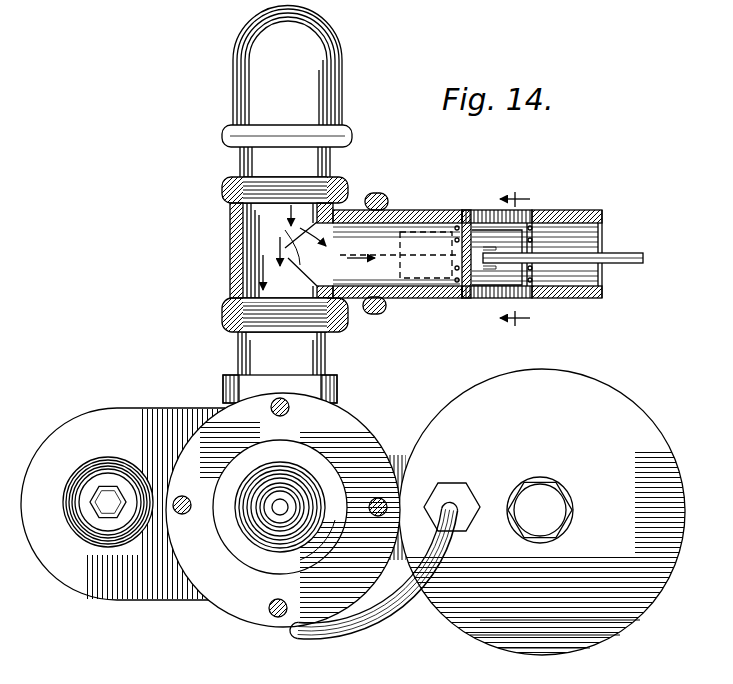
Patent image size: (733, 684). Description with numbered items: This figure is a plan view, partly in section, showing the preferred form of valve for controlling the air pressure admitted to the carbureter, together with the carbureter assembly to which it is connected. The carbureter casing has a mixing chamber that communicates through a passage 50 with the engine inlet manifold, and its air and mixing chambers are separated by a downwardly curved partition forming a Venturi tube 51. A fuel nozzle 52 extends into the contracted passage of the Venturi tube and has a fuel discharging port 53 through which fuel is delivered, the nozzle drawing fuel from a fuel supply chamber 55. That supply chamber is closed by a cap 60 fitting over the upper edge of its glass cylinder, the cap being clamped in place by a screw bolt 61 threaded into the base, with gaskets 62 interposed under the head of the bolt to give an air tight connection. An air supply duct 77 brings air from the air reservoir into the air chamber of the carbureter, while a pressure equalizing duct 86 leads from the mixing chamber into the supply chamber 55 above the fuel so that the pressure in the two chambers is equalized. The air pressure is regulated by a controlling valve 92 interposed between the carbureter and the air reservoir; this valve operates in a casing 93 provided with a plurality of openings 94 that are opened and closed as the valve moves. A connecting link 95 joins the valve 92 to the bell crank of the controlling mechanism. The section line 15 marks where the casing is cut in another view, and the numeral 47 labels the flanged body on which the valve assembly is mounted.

The section line 15- 15 is at (517, 256).
The valve casing flange disc 47 is at (264, 626).
The passage 50 is at (258, 568).
The Venturi tube 51 is at (240, 535).
The fuel nozzle 52 is at (288, 495).
The fuel discharging port 53 is at (282, 508).
The fuel supply chamber 55 is at (668, 577).
The cap 60 is at (643, 587).
The screw bolt 61 is at (528, 505).
The gaskets 62 is at (567, 506).
The air supply duct 77 is at (247, 358).
The pressure equalizing duct 86 is at (341, 640).
The controlling valve 92 is at (466, 208).
The casing 93 is at (576, 300).
The openings 94 is at (482, 300).
The connecting link 95 is at (639, 254).